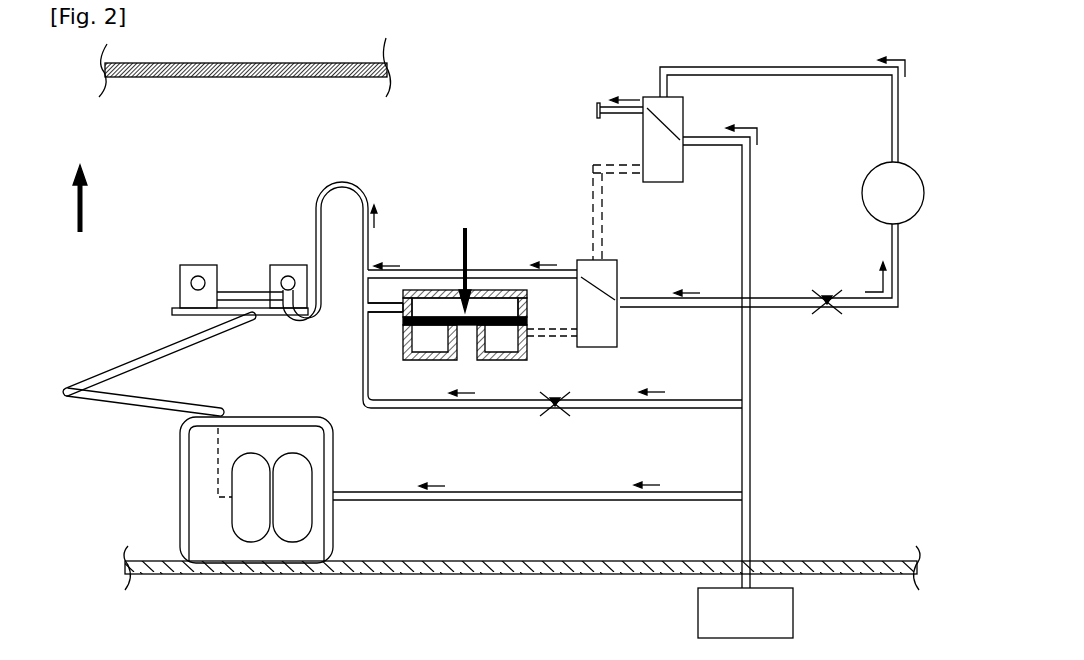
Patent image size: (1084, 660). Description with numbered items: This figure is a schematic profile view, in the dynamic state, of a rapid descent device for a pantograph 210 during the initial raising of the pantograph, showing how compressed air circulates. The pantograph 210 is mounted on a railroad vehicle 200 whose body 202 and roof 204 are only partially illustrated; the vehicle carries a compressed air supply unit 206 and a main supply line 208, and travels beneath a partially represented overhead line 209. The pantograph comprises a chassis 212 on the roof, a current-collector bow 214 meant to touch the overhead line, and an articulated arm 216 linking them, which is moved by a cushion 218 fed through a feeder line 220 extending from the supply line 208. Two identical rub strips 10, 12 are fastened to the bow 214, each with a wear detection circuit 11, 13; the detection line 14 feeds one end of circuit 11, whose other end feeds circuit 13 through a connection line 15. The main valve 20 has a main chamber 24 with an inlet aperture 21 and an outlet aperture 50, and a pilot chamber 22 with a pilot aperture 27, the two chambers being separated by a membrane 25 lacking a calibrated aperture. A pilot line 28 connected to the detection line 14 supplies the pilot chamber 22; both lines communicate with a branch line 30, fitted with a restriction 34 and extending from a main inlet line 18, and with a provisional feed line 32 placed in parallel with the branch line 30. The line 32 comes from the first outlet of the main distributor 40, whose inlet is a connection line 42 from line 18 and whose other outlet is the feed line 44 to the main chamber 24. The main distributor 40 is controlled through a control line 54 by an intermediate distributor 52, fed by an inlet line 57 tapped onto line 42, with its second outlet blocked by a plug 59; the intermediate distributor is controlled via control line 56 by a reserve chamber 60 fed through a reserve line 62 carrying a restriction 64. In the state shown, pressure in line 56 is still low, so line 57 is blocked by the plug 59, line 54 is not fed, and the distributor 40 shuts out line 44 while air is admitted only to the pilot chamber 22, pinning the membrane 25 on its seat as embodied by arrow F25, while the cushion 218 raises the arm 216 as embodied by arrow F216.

The rub strip 10 is at (276, 250).
The wear detection circuit 11 is at (289, 275).
The rub strip 12 is at (197, 250).
The wear detection circuit 13 is at (180, 292).
The detection line 14 is at (333, 186).
The connection line 15 is at (250, 290).
The main inlet line 18 is at (752, 441).
The main valve 20 is at (488, 276).
The inlet aperture 21 is at (517, 333).
The pilot chamber 22 is at (497, 311).
The main chamber 24 is at (427, 341).
The membrane 25 is at (437, 308).
The pilot aperture 27 is at (406, 314).
The pilot line 28 is at (382, 306).
The branch line 30 is at (463, 409).
The provisional feed line 32 is at (433, 270).
The restriction 34 is at (558, 410).
The main distributor 40 is at (632, 278).
The connection line 42 is at (660, 309).
The feed line 44 is at (540, 333).
The outlet aperture 50 is at (467, 358).
The intermediate distributor 52 is at (695, 112).
The control line 54 is at (593, 193).
The control line 56 is at (817, 67).
The inlet line 57 is at (752, 203).
The plug 59 is at (597, 106).
The reserve chamber 60 is at (893, 193).
The reserve line 62 is at (878, 309).
The restriction 64 is at (823, 309).
The railroad vehicle 200 is at (884, 541).
The body 202 is at (262, 612).
The roof 204 is at (530, 560).
The supply unit 206 is at (745, 613).
The supply line 208 is at (752, 528).
The overhead line 209 is at (256, 92).
The pantograph 210 is at (110, 338).
The chassis 212 is at (167, 519).
The current-collector bow 214 is at (263, 318).
The articulated arm 216 is at (143, 413).
The cushion 218 is at (240, 470).
The feeder line 220 is at (527, 491).
The arrow F25 is at (468, 255).
The arrow F216 is at (110, 198).